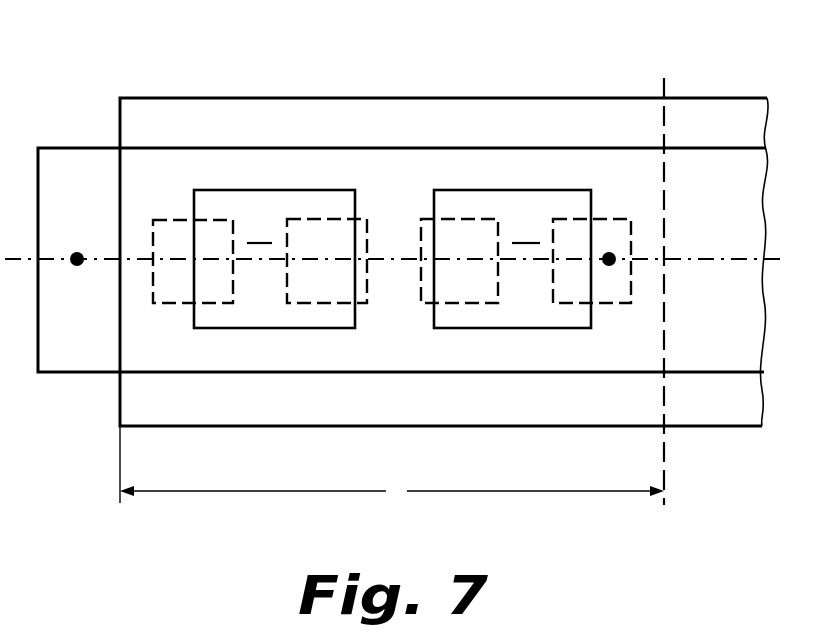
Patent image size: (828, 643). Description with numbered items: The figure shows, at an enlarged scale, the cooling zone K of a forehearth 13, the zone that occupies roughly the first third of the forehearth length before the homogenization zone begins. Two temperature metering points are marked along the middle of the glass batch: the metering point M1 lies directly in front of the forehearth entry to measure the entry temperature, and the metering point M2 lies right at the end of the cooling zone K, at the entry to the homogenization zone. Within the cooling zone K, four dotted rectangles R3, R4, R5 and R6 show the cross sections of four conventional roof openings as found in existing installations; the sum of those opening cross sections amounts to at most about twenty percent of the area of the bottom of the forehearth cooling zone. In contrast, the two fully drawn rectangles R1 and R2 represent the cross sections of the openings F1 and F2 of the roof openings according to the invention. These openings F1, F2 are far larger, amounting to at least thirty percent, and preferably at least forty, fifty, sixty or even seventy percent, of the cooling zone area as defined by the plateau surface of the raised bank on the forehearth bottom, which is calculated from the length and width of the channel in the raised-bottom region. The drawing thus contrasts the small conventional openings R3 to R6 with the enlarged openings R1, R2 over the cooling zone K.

The forehearth 13 is at (413, 106).
The fully drawn rectangle R1 is at (268, 190).
The fully drawn rectangle R2 is at (513, 190).
The dotted rectangle R3 is at (176, 219).
The dotted rectangle R4 is at (368, 230).
The dotted rectangle R5 is at (420, 293).
The dotted rectangle R6 is at (607, 304).
The temperature metering point M1 is at (78, 251).
The temperature metering point M2 is at (610, 252).
The opening F1 is at (260, 226).
The opening F2 is at (526, 226).
The cooling zone K is at (392, 467).